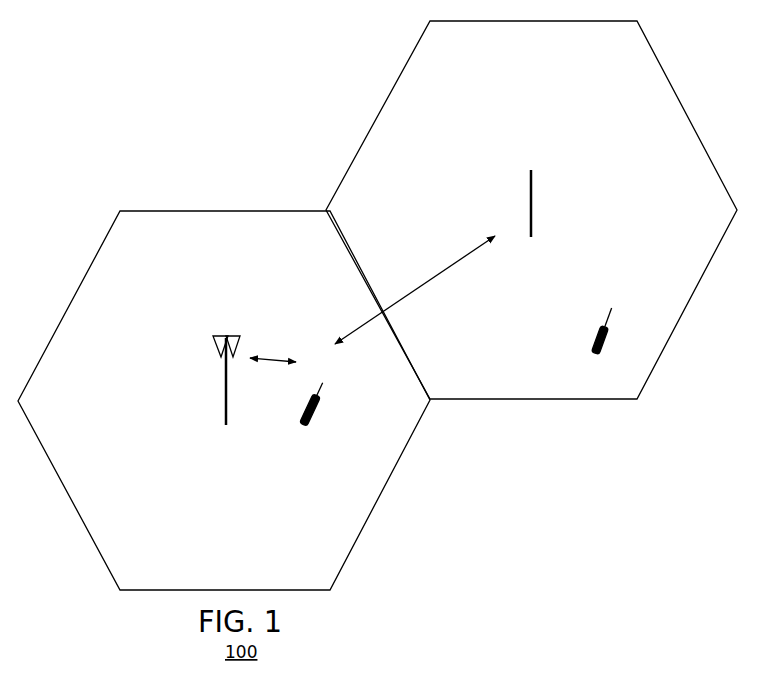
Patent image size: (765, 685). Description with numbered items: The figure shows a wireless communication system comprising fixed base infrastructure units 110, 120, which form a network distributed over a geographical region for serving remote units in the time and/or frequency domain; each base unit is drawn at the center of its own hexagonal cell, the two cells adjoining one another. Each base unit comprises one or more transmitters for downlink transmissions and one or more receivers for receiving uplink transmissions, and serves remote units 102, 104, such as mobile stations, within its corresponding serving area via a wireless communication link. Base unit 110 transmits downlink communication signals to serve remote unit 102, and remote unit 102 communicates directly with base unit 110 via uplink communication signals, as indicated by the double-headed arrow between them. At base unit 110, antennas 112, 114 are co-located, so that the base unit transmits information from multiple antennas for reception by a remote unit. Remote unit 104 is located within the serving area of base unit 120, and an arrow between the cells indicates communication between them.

The remote unit 102 is at (325, 432).
The remote unit 104 is at (602, 315).
The base infrastructure unit 110 is at (183, 406).
The antenna 112 is at (207, 352).
The antenna 114 is at (248, 338).
The base infrastructure unit 120 is at (549, 195).